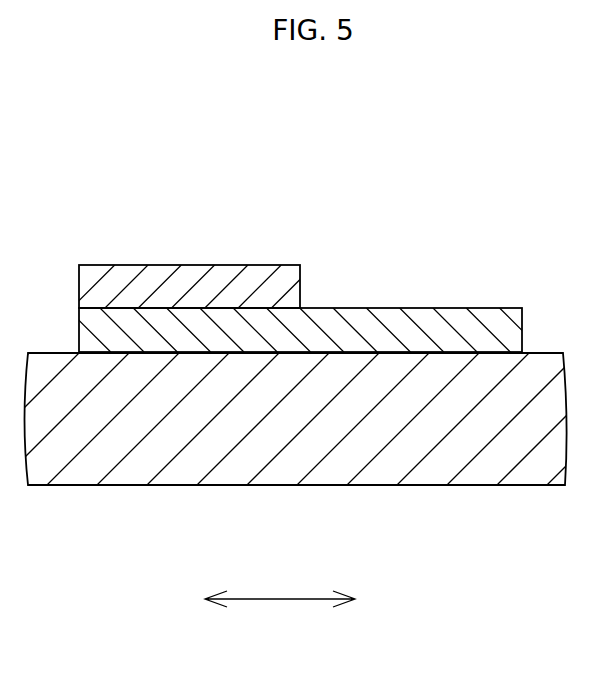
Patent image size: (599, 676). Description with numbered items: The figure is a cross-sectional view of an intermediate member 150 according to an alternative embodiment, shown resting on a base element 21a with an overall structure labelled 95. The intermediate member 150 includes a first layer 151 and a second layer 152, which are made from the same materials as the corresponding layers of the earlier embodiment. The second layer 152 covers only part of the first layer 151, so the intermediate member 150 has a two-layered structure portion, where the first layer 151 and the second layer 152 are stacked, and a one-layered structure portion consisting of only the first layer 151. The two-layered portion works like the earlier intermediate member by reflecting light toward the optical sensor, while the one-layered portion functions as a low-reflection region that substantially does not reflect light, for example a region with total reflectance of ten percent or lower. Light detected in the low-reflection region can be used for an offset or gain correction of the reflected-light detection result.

The test piece / sample structure 95 is at (287, 552).
The intermediate member 150 is at (322, 246).
The first layer 151 is at (373, 320).
The second layer 152 is at (210, 254).
The substrate (first substrate) 21a is at (487, 462).